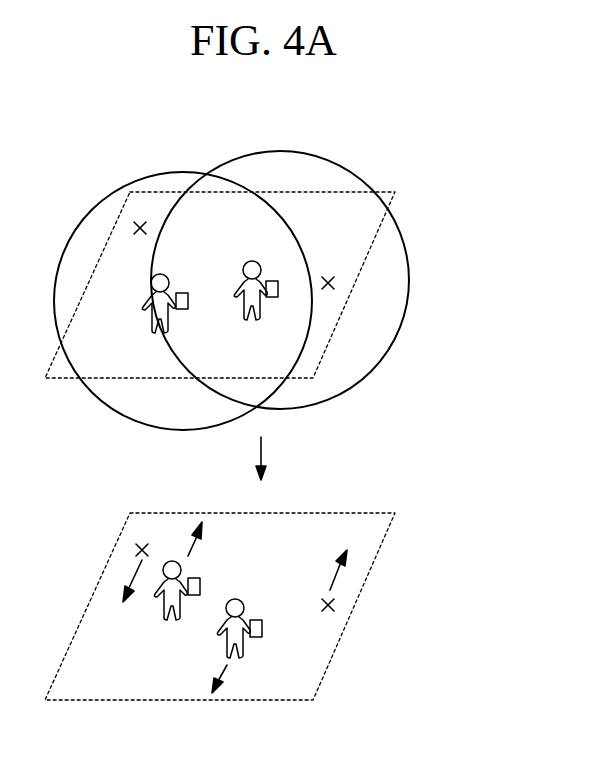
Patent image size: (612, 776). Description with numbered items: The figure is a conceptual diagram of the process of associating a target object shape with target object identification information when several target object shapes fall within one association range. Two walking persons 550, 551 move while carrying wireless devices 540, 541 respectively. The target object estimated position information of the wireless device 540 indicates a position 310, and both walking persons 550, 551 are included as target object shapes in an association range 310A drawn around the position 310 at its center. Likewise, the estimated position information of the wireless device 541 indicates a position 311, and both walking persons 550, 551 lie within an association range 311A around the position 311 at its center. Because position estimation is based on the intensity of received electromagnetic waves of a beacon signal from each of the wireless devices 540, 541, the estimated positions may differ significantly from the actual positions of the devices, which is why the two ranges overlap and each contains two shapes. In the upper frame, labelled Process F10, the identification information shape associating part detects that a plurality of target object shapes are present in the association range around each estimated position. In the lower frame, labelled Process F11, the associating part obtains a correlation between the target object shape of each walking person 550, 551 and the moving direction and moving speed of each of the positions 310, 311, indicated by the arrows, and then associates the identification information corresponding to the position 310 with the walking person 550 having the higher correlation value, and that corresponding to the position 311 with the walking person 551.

The position 310 is at (140, 223).
The association range 310A is at (190, 172).
The position 311 is at (332, 283).
The association range 311A is at (328, 160).
The wireless device 540 is at (280, 292).
The wireless device 541 is at (185, 309).
The walking person 550 is at (262, 312).
The walking person 551 is at (150, 305).
The process F10 is at (442, 340).
The process F11 is at (397, 615).